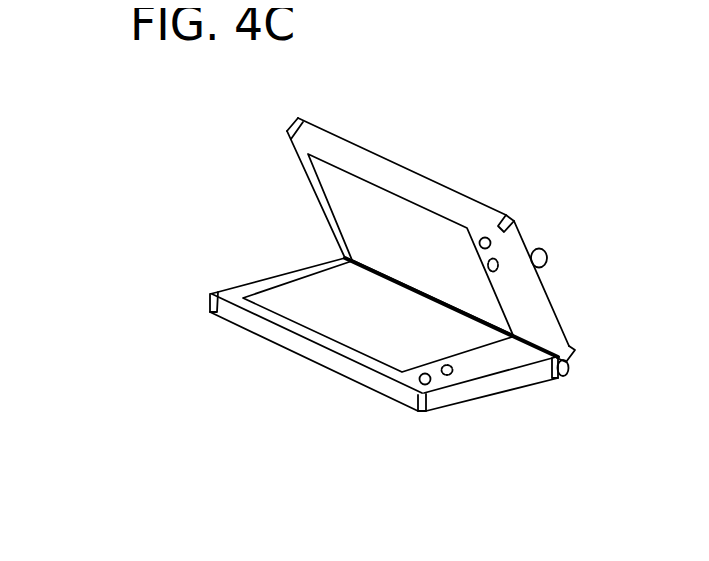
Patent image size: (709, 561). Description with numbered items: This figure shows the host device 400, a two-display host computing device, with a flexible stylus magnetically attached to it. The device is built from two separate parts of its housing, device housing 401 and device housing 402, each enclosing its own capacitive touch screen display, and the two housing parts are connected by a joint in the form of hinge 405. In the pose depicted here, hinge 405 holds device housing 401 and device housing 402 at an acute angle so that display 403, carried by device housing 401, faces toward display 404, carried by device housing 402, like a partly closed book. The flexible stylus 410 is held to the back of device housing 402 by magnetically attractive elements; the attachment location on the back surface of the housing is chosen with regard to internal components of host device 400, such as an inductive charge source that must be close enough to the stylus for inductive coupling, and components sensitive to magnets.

The host device 400 is at (395, 140).
The device housing 401 is at (468, 397).
The device housing 402 is at (566, 326).
The display 403 is at (285, 298).
The display 404 is at (336, 195).
The hinge 405 is at (574, 357).
The flexible stylus 410 is at (547, 258).